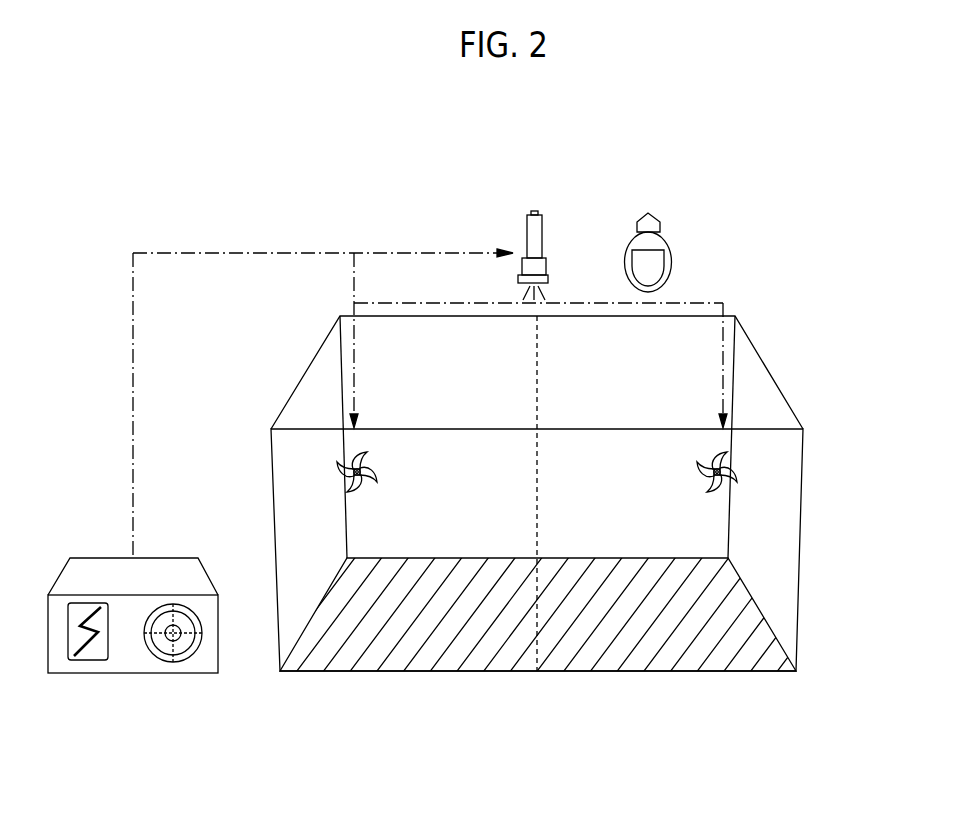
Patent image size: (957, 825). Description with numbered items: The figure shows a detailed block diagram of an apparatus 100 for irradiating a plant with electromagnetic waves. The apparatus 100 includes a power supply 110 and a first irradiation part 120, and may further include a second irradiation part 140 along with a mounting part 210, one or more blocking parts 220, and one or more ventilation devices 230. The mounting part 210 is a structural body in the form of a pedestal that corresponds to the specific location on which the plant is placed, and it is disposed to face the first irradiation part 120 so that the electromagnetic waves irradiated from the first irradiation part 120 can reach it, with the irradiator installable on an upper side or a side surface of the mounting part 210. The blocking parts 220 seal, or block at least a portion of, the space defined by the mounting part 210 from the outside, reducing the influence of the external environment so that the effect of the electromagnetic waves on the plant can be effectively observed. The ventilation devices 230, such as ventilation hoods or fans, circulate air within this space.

The apparatus for irradiating a plant with electromagnetic waves 100 is at (175, 192).
The power supply 110 is at (110, 557).
The first irradiation part 120 is at (547, 242).
The second irradiation part 140 is at (672, 241).
The mounting part 210 is at (690, 657).
The blocking part 220 is at (537, 523).
The ventilation device 230 is at (337, 470).